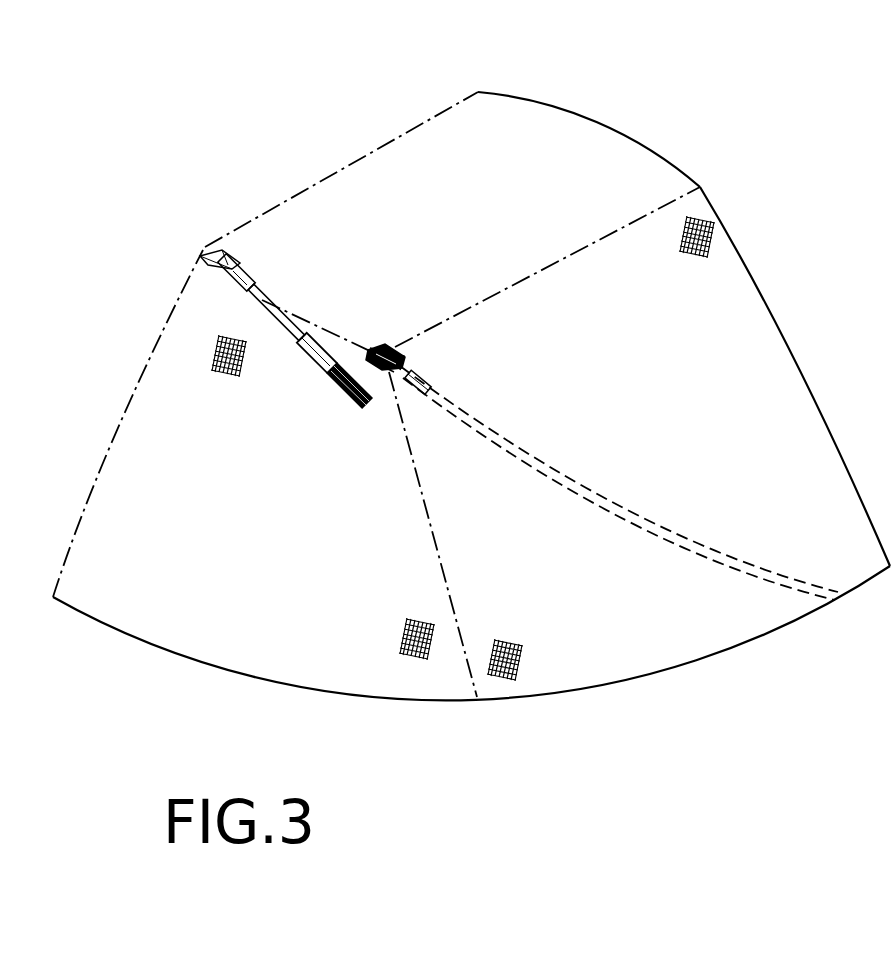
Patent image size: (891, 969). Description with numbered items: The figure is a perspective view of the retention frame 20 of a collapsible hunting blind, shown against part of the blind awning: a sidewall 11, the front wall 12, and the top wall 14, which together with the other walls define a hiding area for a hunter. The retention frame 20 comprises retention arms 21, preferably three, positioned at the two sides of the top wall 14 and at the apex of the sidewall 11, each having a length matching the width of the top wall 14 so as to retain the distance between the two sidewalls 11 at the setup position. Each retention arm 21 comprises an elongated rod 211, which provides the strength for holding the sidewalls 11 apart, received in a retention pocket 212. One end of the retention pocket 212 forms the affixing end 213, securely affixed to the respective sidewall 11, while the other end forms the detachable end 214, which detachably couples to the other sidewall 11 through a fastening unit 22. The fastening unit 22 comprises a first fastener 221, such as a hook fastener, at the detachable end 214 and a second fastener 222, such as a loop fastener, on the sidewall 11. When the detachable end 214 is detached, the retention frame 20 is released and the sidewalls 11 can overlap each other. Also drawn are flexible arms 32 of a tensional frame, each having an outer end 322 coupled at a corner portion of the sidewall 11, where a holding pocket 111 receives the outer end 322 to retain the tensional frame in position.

The retention frame 20 is at (247, 163).
The retention arm 21 is at (293, 202).
The elongated rod 211 is at (290, 323).
The retention pocket 212 is at (262, 292).
The affixing end 213 is at (212, 237).
The detachable end 214 is at (395, 347).
The fastening unit 22 is at (370, 422).
The first fastener 221 is at (355, 405).
The second fastener 222 is at (406, 363).
The flexible arm 32 is at (619, 500).
The outer end 322 is at (441, 382).
The sidewall 11 is at (703, 447).
The holding pocket 111 is at (392, 368).
The front wall 12 is at (270, 547).
The top wall 14 is at (512, 174).